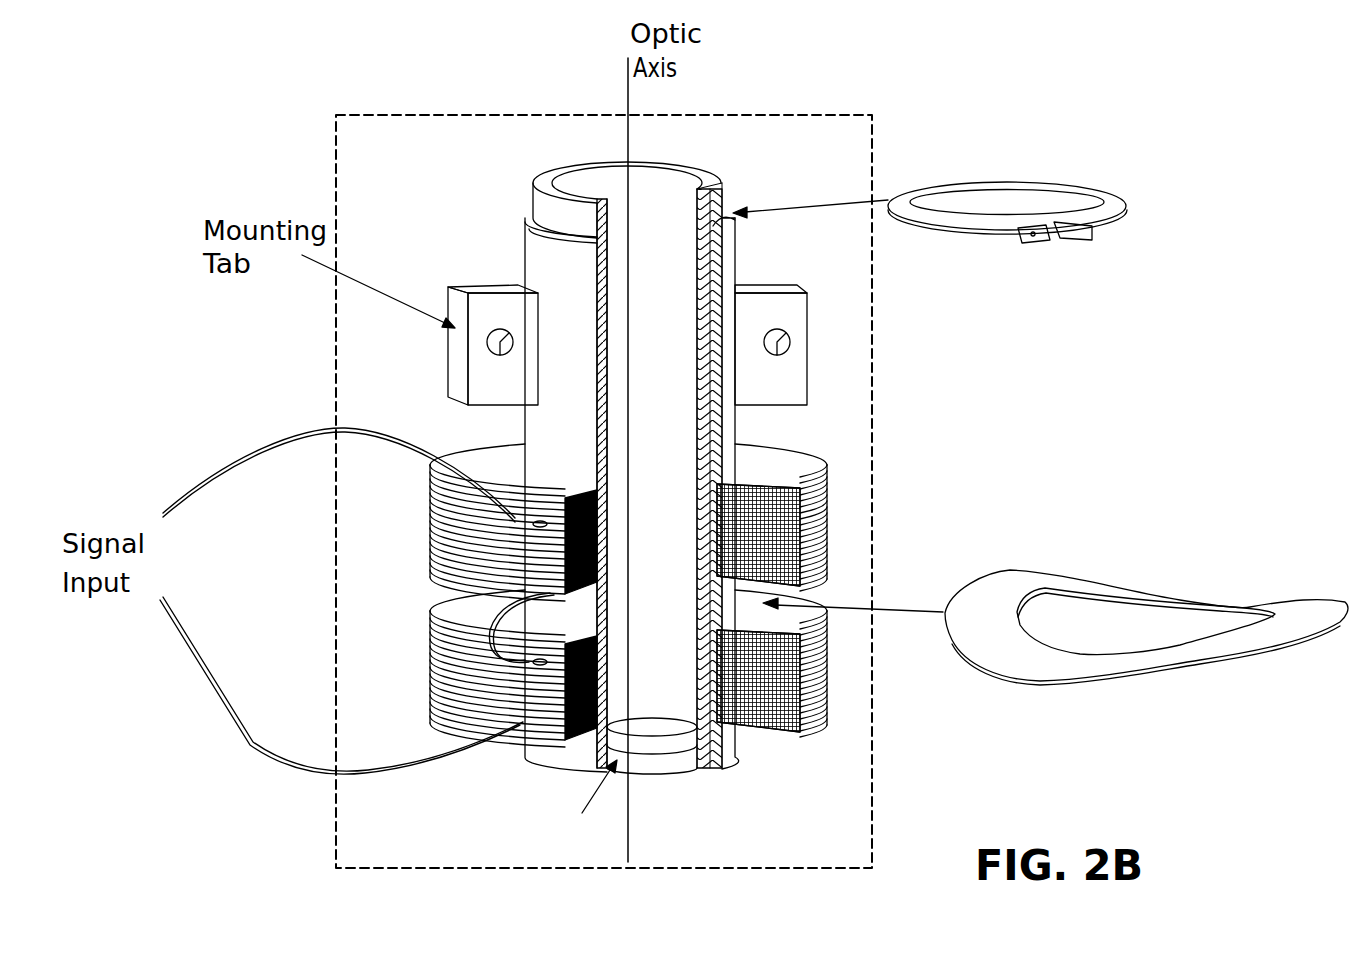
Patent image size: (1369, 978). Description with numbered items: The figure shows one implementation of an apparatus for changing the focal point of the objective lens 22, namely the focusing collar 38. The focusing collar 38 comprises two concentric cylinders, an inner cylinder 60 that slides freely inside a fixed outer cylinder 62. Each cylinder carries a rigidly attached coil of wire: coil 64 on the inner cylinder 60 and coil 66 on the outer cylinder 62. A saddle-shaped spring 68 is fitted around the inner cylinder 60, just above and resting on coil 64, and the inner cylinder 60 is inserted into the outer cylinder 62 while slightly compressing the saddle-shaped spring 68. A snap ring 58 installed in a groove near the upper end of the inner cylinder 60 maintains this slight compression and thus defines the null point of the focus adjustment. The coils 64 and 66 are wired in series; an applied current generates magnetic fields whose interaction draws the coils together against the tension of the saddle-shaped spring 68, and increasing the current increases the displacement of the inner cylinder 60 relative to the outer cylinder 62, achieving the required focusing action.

The objective lens 22 is at (665, 765).
The focusing collar 38 is at (787, 113).
The snap ring 58 is at (1125, 205).
The inner cylinder 60 is at (548, 168).
The outer cylinder 62 is at (525, 245).
The coil of wire 64 is at (828, 690).
The coil of wire 66 is at (830, 487).
The saddle-shaped spring 68 is at (1230, 657).